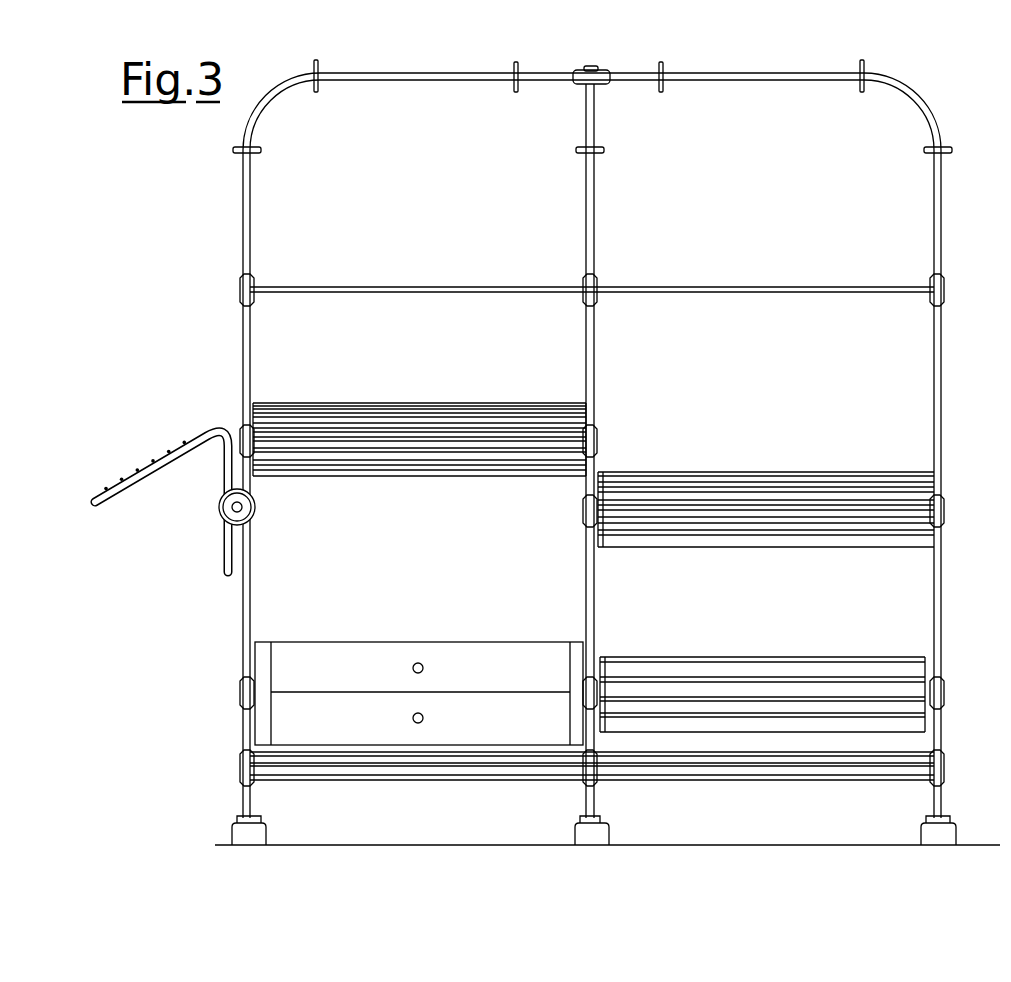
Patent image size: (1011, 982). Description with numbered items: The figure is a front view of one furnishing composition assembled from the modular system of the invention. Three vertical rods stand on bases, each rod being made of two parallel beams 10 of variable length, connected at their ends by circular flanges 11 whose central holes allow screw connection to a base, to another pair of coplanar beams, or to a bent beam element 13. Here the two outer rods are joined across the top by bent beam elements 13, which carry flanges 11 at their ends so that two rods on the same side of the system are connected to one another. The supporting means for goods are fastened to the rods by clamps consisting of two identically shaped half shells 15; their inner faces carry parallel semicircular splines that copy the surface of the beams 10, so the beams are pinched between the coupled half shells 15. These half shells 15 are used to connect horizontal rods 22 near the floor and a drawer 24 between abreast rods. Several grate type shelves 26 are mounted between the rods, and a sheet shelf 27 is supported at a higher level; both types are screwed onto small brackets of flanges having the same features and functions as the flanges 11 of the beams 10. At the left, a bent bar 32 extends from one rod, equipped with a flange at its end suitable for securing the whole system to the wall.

The parallel beam 10 is at (250, 360).
The circular flange 11 is at (518, 75).
The bent beam element 13 is at (938, 100).
The half shell 15 is at (600, 74).
The horizontal rod 22 is at (424, 792).
The drawer 24 is at (460, 650).
The grate type shelf 26 is at (420, 420).
The sheet shelf 27 is at (420, 287).
The bent bar 32 is at (222, 538).